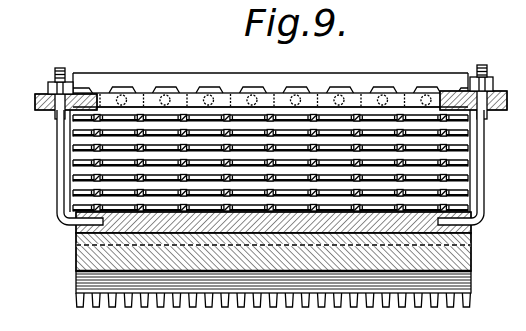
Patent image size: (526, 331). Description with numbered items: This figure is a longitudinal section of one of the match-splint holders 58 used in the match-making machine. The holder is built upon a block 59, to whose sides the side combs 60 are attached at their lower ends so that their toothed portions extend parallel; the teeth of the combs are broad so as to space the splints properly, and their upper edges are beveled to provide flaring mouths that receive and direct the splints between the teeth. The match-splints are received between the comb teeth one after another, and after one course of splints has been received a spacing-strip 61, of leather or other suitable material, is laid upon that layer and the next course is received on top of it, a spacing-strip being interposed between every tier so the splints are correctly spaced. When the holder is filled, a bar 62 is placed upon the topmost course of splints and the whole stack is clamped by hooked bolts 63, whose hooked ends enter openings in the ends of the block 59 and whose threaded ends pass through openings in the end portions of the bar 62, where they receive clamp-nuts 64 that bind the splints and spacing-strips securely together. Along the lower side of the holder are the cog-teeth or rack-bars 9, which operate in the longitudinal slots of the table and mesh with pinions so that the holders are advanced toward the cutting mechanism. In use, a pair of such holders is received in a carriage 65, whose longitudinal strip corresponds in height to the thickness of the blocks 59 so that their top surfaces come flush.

The cog-teeth or rack-bars 9 is at (271, 298).
The match-splint holder 58 is at (237, 142).
The block 59 is at (78, 228).
The side combs 60 is at (122, 88).
The spacing-strip 61 is at (303, 108).
The bar 62 is at (183, 99).
The hooked bolts 63 is at (58, 149).
The clamp-nuts 64 is at (48, 84).
The carriage 65 is at (382, 72).